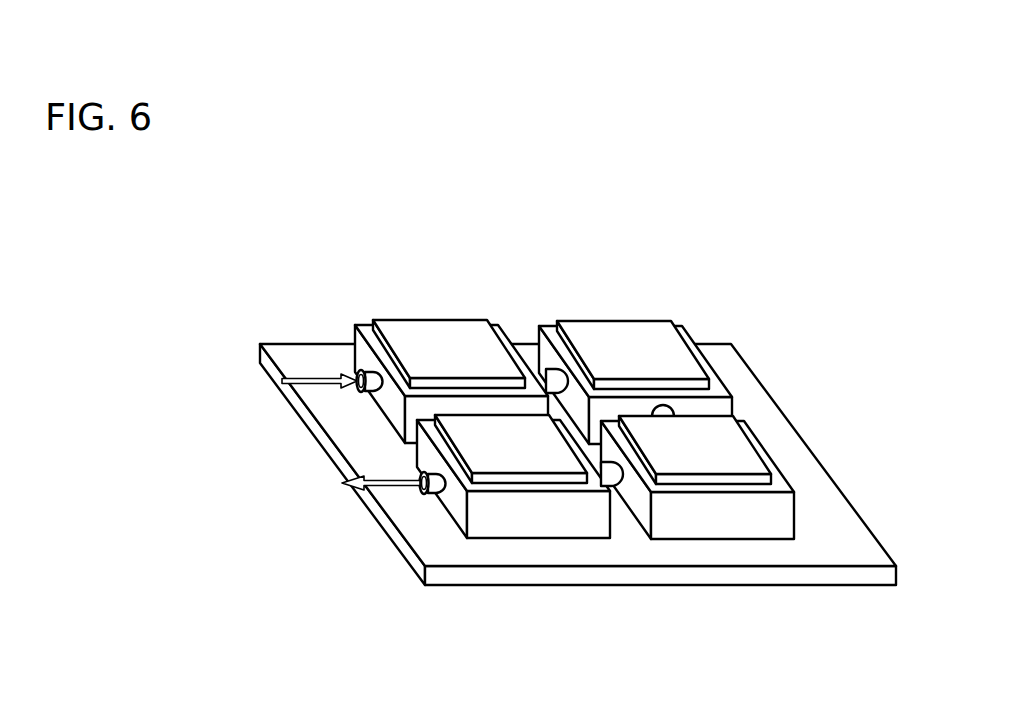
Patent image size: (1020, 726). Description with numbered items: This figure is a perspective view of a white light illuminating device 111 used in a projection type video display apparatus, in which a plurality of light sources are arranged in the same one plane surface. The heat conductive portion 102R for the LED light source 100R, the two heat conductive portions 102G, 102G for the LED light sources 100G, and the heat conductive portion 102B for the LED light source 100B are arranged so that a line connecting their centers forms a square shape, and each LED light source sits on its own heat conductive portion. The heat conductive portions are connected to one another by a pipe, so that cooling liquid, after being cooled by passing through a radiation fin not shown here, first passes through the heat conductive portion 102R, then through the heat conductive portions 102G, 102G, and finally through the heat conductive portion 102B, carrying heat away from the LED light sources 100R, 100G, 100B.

The white light illuminating device 111 is at (718, 216).
The LED light source 100R is at (472, 333).
The heat conductive portion 102R is at (370, 333).
The LED light source 100G is at (667, 340).
The heat conductive portion 102G is at (555, 337).
The LED light source 100B is at (533, 467).
The heat conductive portion 102B is at (472, 487).